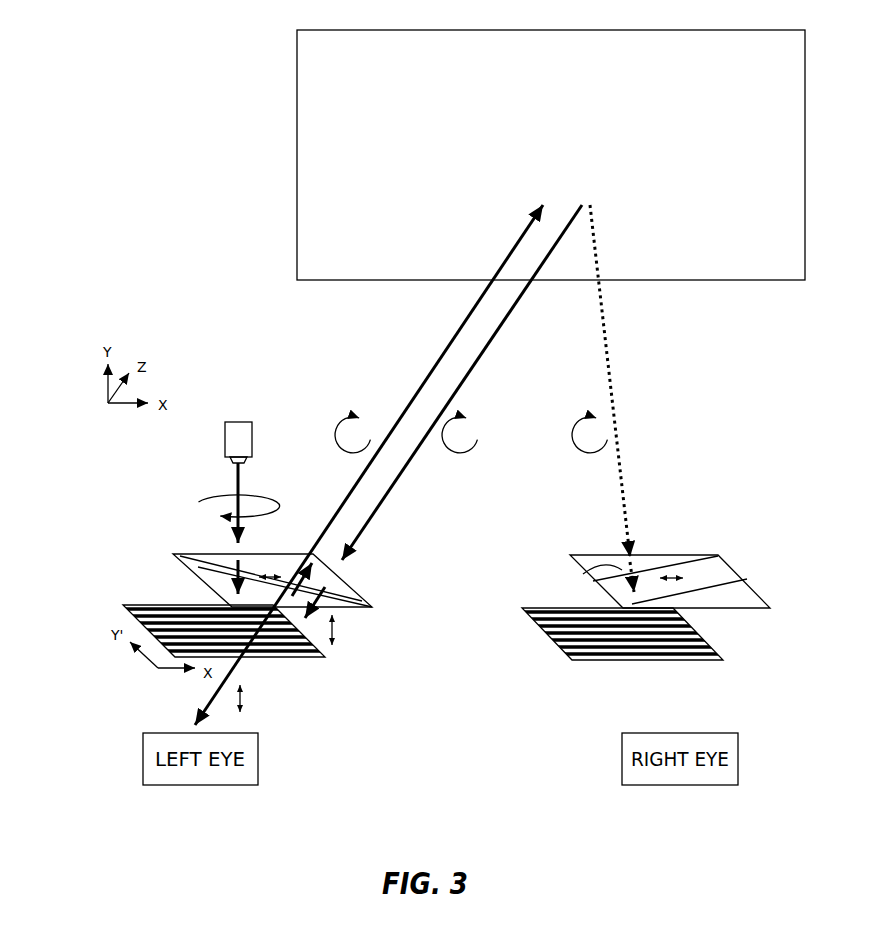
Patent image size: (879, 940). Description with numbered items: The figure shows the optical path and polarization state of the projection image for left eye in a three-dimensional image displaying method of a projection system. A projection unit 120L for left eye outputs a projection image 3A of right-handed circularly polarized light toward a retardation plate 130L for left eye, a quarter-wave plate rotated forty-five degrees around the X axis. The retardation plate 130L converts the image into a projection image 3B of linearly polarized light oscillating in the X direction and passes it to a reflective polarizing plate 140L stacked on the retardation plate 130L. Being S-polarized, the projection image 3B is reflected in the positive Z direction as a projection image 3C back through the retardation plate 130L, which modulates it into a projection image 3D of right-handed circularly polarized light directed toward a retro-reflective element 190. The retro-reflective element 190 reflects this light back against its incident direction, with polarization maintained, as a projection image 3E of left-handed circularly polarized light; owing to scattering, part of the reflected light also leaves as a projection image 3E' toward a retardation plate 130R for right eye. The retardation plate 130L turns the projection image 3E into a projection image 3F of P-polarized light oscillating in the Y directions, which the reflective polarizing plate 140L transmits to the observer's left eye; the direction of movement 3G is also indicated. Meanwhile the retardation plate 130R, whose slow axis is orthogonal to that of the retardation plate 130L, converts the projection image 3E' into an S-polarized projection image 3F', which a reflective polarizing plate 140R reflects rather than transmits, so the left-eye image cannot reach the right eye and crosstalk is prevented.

The retro-reflective element 190 is at (297, 236).
The projection unit for left eye 120L is at (225, 440).
The projection image for left eye 3A is at (241, 485).
The projection image of linearly polarized light 3B is at (193, 556).
The projection image reflected by reflective polarizing plate 3C is at (305, 565).
The projection image of right-handed circularly polarized light 3D is at (422, 385).
The projection image of left-handed circularly polarized light 3E is at (443, 411).
The projection image of left-handed circularly polarized light toward right-eye reta 3E' is at (624, 398).
The projection image of linearly polarized light oscillating in Y directions 3F is at (364, 626).
The projection image of linearly polarized light oscillating in X directions 3F' is at (570, 572).
The translation direction of left detector 3G is at (247, 673).
The retardation plate for left eye 130L is at (194, 575).
The reflective polarizing plate 140L is at (123, 605).
The retardation plate for right eye 130R is at (724, 578).
The reflective polarizing plate for right eye 140R is at (700, 638).